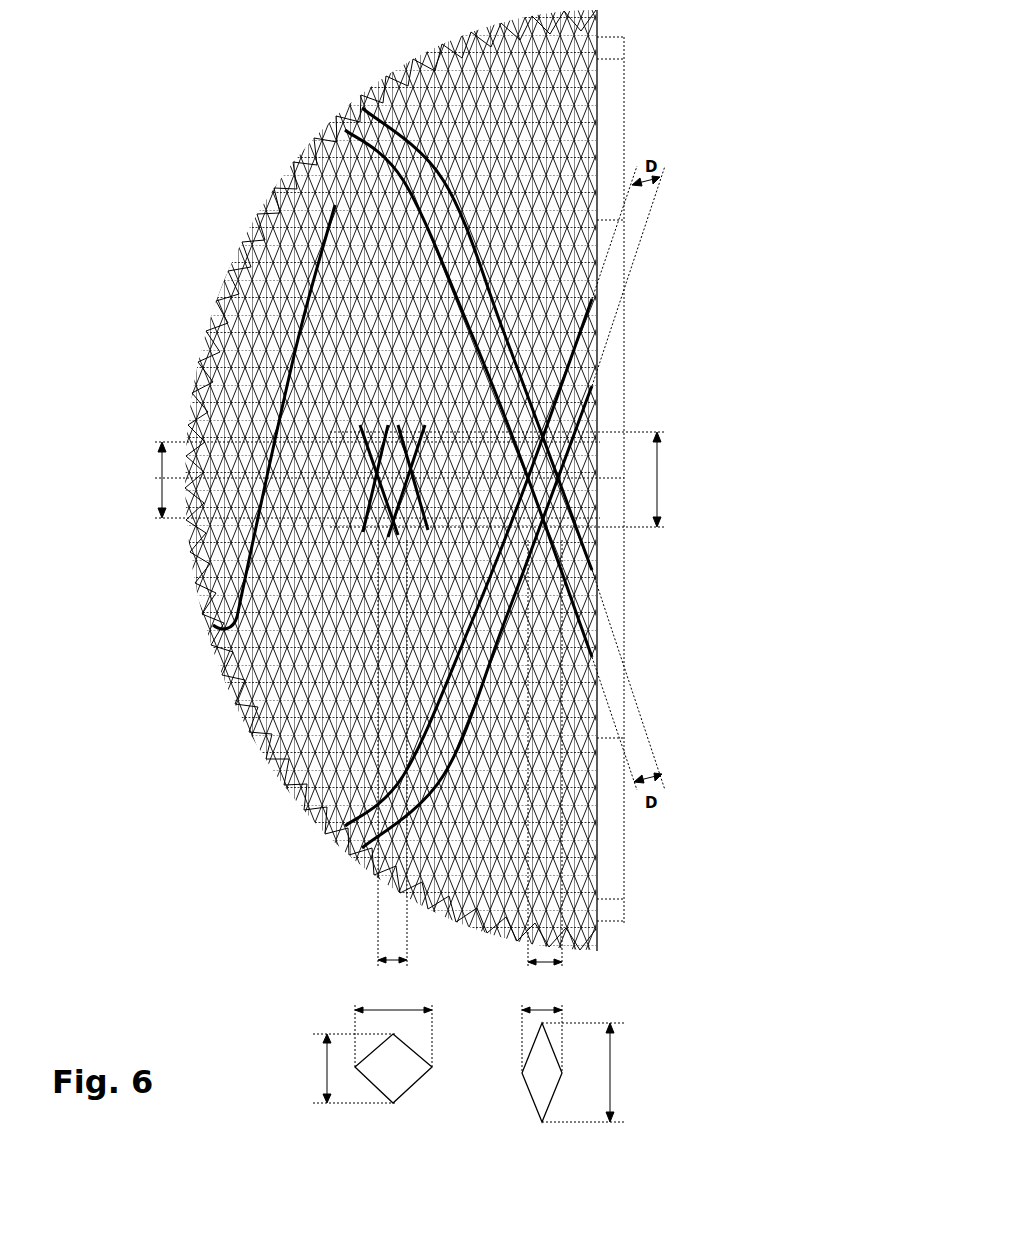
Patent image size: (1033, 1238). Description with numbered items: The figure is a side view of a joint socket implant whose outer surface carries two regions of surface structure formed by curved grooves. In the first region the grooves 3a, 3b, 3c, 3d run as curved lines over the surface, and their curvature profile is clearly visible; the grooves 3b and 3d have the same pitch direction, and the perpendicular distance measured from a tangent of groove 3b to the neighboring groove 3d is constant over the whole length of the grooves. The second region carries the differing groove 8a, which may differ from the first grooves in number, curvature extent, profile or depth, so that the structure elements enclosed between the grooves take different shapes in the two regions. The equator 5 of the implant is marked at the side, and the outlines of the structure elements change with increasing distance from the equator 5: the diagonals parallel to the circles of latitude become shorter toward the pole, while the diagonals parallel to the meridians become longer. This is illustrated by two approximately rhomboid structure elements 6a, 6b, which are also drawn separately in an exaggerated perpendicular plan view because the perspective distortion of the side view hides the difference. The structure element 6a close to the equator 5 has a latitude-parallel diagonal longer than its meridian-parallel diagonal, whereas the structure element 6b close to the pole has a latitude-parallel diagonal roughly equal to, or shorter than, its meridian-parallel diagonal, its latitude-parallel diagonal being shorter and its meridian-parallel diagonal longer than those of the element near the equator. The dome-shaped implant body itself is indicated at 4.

The optical dome / lens element 4 is at (183, 472).
The equator 5 is at (638, 107).
The groove 3a is at (590, 567).
The groove 3b is at (588, 405).
The groove 3c is at (577, 613).
The groove 3d is at (587, 307).
The structure element close to the equator 6a is at (570, 512).
The structure element close to the pole 6b is at (375, 505).
The groove 8a is at (258, 562).